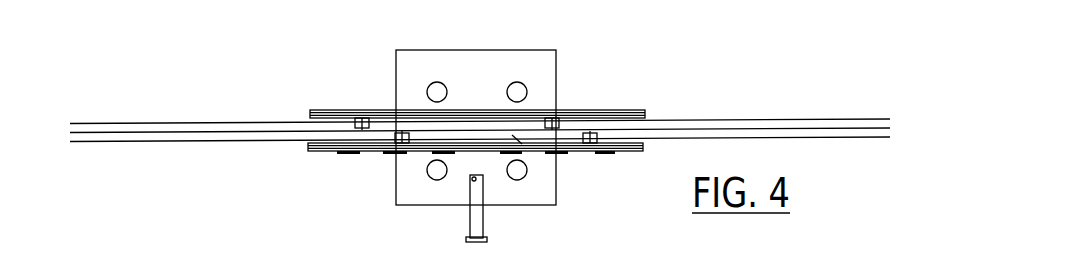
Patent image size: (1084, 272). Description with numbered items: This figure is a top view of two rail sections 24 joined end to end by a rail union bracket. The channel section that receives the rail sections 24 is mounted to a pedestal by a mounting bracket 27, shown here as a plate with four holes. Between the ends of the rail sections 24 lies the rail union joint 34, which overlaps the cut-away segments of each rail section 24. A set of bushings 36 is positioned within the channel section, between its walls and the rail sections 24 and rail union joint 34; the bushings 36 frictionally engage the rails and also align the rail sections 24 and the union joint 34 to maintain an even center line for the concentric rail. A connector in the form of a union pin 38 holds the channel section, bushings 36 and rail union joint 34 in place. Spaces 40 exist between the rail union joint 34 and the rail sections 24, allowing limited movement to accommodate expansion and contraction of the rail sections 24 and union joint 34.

The rail section 24 is at (245, 142).
The mounting bracket 27 is at (557, 68).
The rail union joint 34 is at (512, 135).
The bushing 36 is at (645, 113).
The union pin 38 is at (483, 218).
The space 40 is at (361, 124).